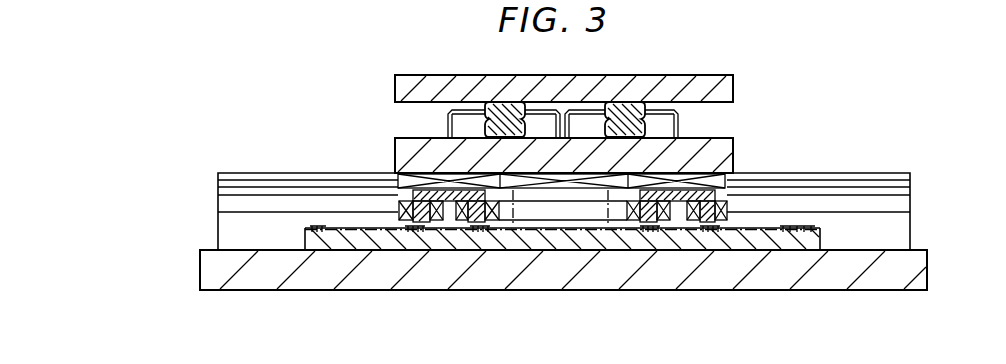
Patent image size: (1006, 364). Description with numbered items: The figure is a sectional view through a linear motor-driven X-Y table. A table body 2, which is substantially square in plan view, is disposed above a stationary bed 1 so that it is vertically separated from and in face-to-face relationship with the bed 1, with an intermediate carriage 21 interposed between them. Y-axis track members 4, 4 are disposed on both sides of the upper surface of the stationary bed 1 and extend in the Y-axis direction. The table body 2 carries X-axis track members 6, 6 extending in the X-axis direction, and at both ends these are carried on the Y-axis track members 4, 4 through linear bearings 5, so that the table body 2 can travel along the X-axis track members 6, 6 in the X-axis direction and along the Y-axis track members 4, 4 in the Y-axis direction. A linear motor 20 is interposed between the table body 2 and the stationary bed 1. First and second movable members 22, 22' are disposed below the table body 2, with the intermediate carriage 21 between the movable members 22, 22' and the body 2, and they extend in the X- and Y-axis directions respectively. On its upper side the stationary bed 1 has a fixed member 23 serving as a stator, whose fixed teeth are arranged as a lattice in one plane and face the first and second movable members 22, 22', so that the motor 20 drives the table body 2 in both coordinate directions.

The stationary bed 1 is at (767, 278).
The table body 2 is at (625, 86).
The Y-axis track member 4 is at (222, 204).
The linear bearing 5 is at (450, 120).
The X-axis track member 6 is at (507, 118).
The linear motor 20 is at (562, 277).
The intermediate carriage 21 is at (718, 150).
The first movable member 22 is at (563, 264).
The second movable member 22' is at (559, 264).
The fixed member 23 is at (488, 240).